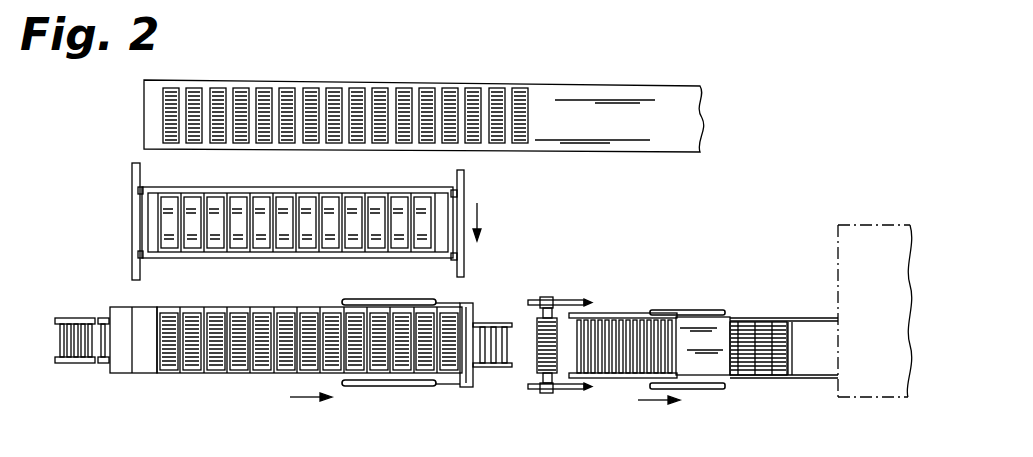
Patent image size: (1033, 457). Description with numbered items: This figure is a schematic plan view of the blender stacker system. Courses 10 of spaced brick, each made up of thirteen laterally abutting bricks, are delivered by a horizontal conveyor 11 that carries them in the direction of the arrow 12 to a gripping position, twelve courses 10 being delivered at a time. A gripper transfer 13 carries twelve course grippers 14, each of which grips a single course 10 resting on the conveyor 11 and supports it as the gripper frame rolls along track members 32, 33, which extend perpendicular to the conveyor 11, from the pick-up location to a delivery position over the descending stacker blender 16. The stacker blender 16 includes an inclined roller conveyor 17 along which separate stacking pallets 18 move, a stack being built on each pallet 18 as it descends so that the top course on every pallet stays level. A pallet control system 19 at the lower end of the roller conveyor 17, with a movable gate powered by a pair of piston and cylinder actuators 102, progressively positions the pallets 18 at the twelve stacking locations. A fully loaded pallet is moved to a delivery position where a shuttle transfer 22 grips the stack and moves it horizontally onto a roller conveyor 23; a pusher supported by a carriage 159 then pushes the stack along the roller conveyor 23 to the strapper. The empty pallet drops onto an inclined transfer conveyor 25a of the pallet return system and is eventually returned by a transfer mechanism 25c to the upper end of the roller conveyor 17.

The courses of spaced brick 10 is at (212, 94).
The horizontal conveyor 11 is at (604, 100).
The arrow 12 is at (395, 68).
The gripper transfer 13 is at (288, 189).
The course grippers 14 is at (400, 208).
The descending stacker blender 16 is at (237, 381).
The inclined roller conveyor 17 is at (100, 365).
The stacking pallets 18 is at (150, 373).
The pallet control system 19 is at (462, 305).
The shuttle transfer assembly 22 is at (553, 300).
The roller conveyor 23 is at (628, 308).
The transfer conveyor 25a is at (495, 367).
The transfer mechanism 25c is at (68, 318).
The track member 32 is at (132, 171).
The track member 33 is at (465, 178).
The piston and cylinder actuators 102 is at (395, 291).
The carriage 159 is at (730, 326).